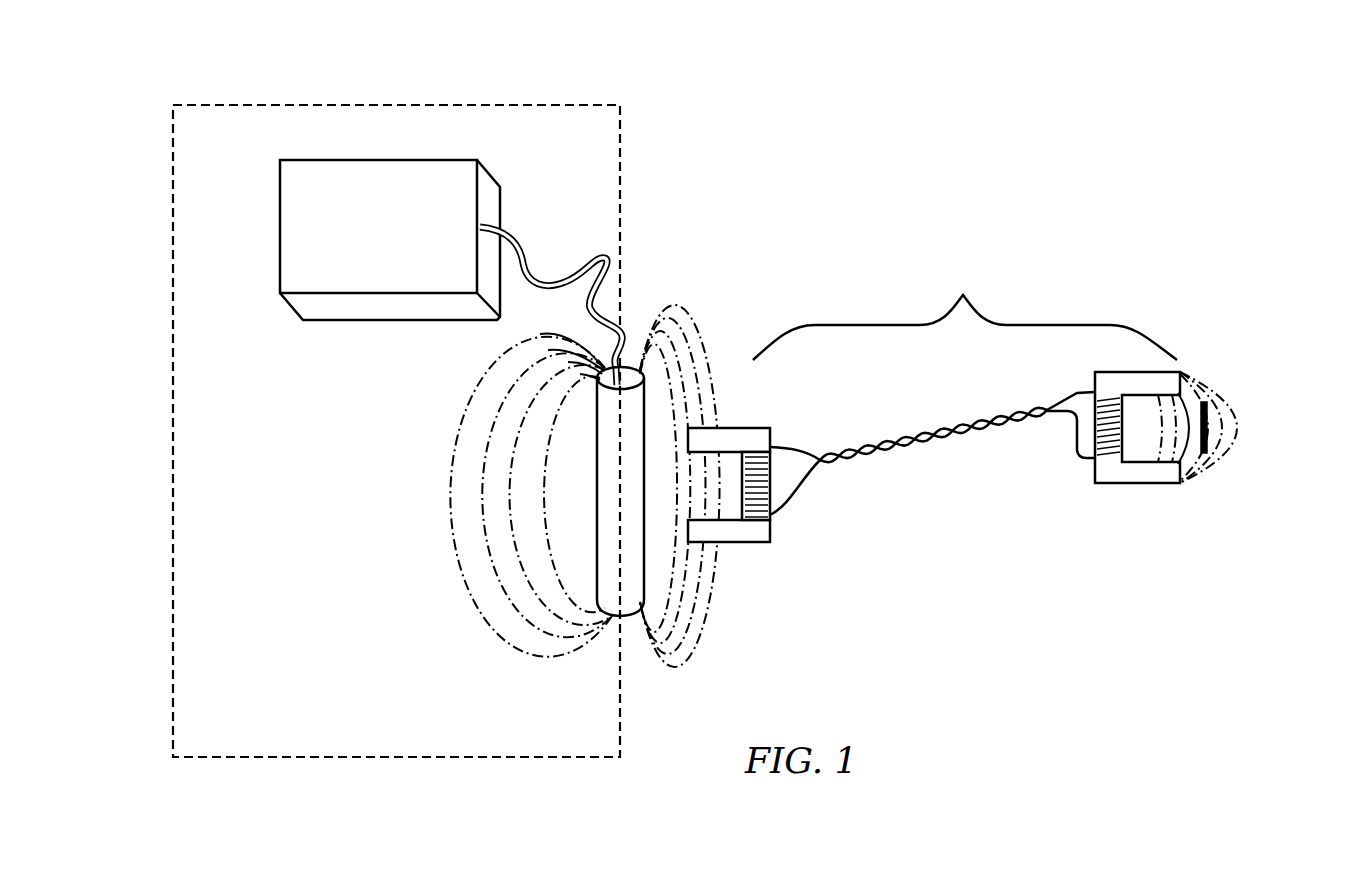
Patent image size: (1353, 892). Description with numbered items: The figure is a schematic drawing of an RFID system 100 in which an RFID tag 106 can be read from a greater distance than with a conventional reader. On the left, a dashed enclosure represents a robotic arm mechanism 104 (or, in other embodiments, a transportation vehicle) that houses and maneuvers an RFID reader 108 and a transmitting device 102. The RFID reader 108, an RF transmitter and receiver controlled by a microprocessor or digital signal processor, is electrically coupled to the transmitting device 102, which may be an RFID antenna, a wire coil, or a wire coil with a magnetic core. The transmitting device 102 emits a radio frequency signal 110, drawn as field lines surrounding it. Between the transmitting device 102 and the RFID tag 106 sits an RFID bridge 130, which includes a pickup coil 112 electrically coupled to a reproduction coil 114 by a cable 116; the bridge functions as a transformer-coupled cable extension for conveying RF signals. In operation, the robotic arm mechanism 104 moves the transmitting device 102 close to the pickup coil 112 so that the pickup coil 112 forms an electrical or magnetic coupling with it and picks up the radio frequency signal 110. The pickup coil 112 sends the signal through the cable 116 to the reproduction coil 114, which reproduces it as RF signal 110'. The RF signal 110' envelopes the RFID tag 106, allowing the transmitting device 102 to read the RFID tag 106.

The RFID system 100 is at (880, 197).
The transmitting device 102 is at (610, 577).
The robotic arm mechanism 104 is at (170, 193).
The RFID tag 106 is at (1210, 415).
The RFID reader 108 is at (280, 261).
The radio frequency signal 110 is at (521, 486).
The reproduced RF signal 110' is at (1242, 403).
The pickup coil 112 is at (752, 436).
The reproduction coil 114 is at (1130, 475).
The cable 116 is at (882, 457).
The RFID bridge 130 is at (965, 313).